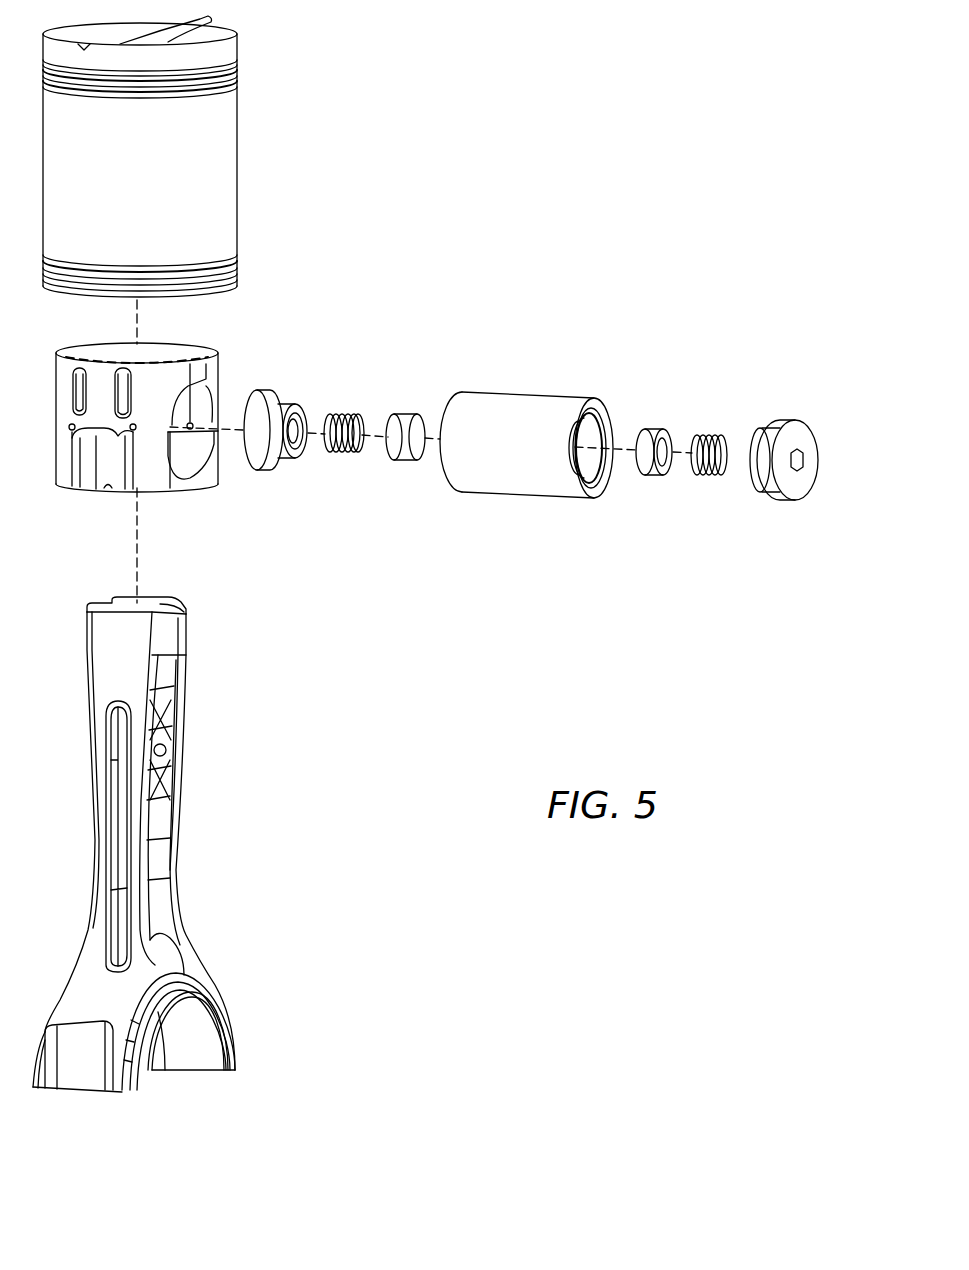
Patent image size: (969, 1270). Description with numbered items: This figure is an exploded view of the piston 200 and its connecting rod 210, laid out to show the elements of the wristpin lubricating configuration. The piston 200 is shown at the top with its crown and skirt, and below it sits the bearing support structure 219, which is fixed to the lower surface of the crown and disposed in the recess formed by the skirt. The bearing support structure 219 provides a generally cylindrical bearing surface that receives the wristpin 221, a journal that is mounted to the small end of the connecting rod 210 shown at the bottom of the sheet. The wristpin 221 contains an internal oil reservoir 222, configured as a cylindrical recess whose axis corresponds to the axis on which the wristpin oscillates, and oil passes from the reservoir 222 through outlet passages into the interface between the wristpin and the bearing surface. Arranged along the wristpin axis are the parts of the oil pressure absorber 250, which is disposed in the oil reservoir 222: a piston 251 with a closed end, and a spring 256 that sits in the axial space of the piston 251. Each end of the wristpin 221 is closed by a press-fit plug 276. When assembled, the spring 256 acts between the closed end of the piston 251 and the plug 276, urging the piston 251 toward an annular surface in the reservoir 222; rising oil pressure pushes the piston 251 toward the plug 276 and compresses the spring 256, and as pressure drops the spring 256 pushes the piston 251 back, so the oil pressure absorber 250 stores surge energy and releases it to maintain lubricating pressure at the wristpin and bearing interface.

The piston 200 is at (255, 158).
The bearing support structure 219 is at (232, 353).
The press-fit plug 276 is at (265, 477).
The oil pressure absorber 250 is at (432, 412).
The piston 251 is at (650, 478).
The spring 256 is at (711, 478).
The wristpin 221 is at (525, 398).
The oil reservoir 222 is at (574, 456).
The connecting rod 210 is at (211, 835).